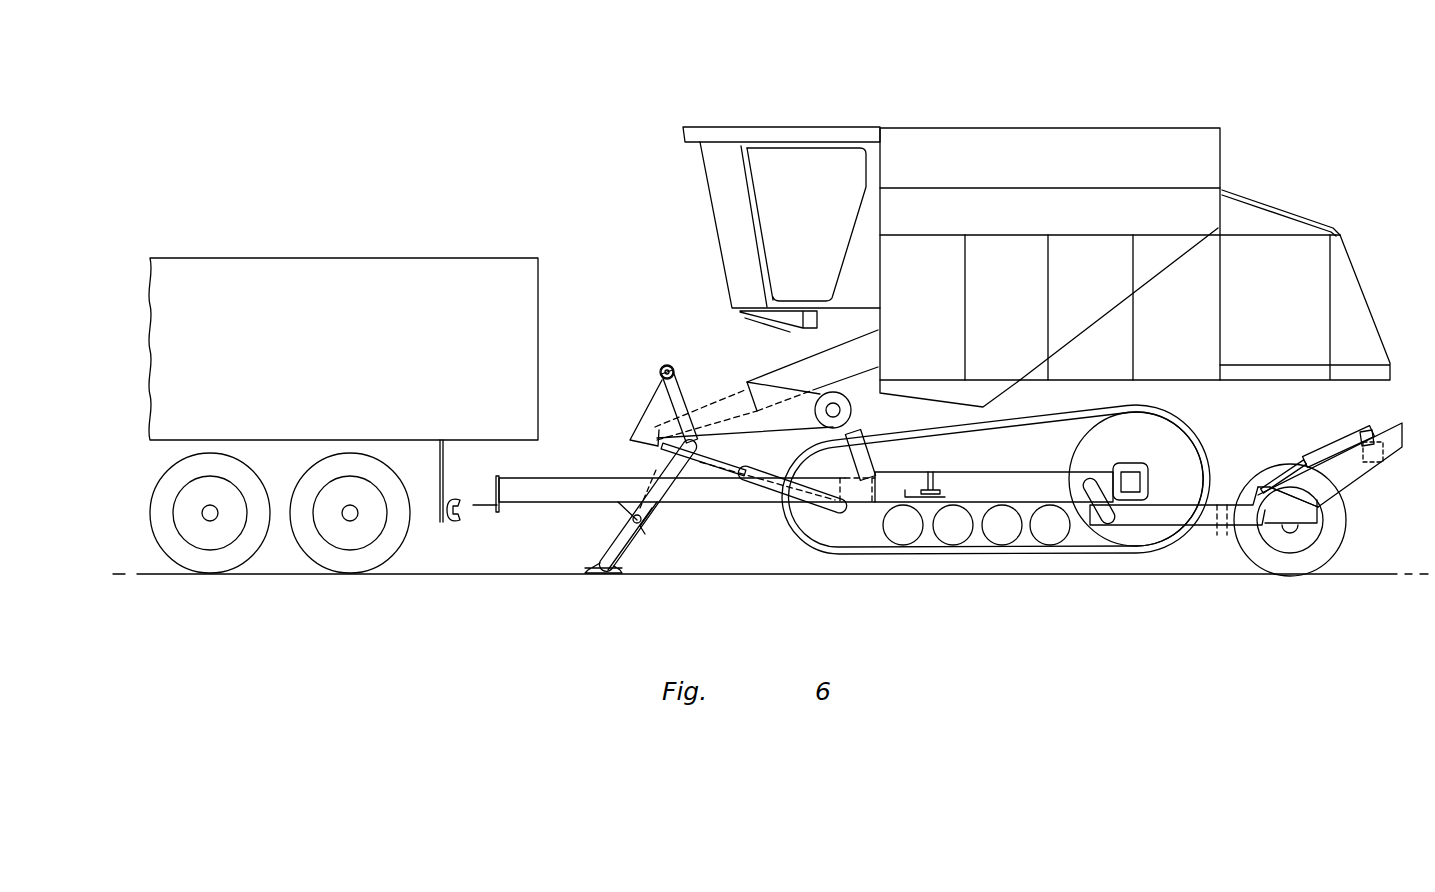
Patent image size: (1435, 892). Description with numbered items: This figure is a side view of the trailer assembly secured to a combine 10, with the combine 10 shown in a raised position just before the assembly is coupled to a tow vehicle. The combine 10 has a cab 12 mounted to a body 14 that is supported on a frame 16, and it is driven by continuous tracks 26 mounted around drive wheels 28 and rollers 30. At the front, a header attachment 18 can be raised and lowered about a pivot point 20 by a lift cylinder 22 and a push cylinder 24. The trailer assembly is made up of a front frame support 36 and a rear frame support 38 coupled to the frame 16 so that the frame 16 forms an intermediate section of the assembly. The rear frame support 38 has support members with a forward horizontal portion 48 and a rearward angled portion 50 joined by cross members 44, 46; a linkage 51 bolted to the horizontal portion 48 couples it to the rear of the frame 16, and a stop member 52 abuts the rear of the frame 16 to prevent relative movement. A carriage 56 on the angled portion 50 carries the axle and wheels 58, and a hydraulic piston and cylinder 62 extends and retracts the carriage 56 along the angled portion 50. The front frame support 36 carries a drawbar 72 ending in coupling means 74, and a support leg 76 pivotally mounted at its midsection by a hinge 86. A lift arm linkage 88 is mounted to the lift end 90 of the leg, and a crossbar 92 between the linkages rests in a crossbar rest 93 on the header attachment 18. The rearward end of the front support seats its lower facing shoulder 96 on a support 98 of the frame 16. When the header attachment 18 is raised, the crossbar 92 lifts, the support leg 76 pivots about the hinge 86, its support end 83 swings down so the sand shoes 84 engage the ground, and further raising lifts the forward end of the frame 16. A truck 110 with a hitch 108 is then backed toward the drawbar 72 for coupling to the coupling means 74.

The combine 10 is at (1192, 85).
The cab 12 is at (801, 158).
The body 14 is at (1209, 200).
The frame 16 is at (1028, 483).
The header attachment 18 is at (650, 403).
The pivot point 20 is at (852, 410).
The lift cylinder 22 is at (821, 353).
The push cylinder 24 is at (748, 480).
The tracks 26 is at (1052, 548).
The drive wheels 28 is at (1176, 433).
The rollers 30 is at (955, 533).
The front frame support 36 is at (703, 495).
The rear frame support 38 is at (1337, 480).
The cross member 44 is at (1225, 528).
The cross member 46 is at (1385, 428).
The horizontal portion 48 is at (1157, 523).
The angled portion 50 is at (1353, 468).
The linkage 51 is at (1090, 480).
The stop member 52 is at (1150, 498).
The carriage 56 is at (1318, 518).
The wheels 58 is at (1277, 563).
The hydraulic piston and cylinder 62 is at (1331, 443).
The drawbar 72 is at (543, 488).
The coupling means 74 is at (500, 507).
The support leg 76 is at (657, 481).
The support end 83 is at (611, 546).
The sand shoes 84 is at (603, 577).
The hinge 86 is at (635, 528).
The lift arm linkage 88 is at (678, 394).
The lift end 90 is at (702, 466).
The crossbar 92 is at (667, 366).
The crossbar rest 93 is at (660, 370).
The lower facing shoulder 96 is at (930, 497).
The support 98 is at (946, 453).
The hitch 108 is at (450, 522).
The truck 110 is at (437, 268).